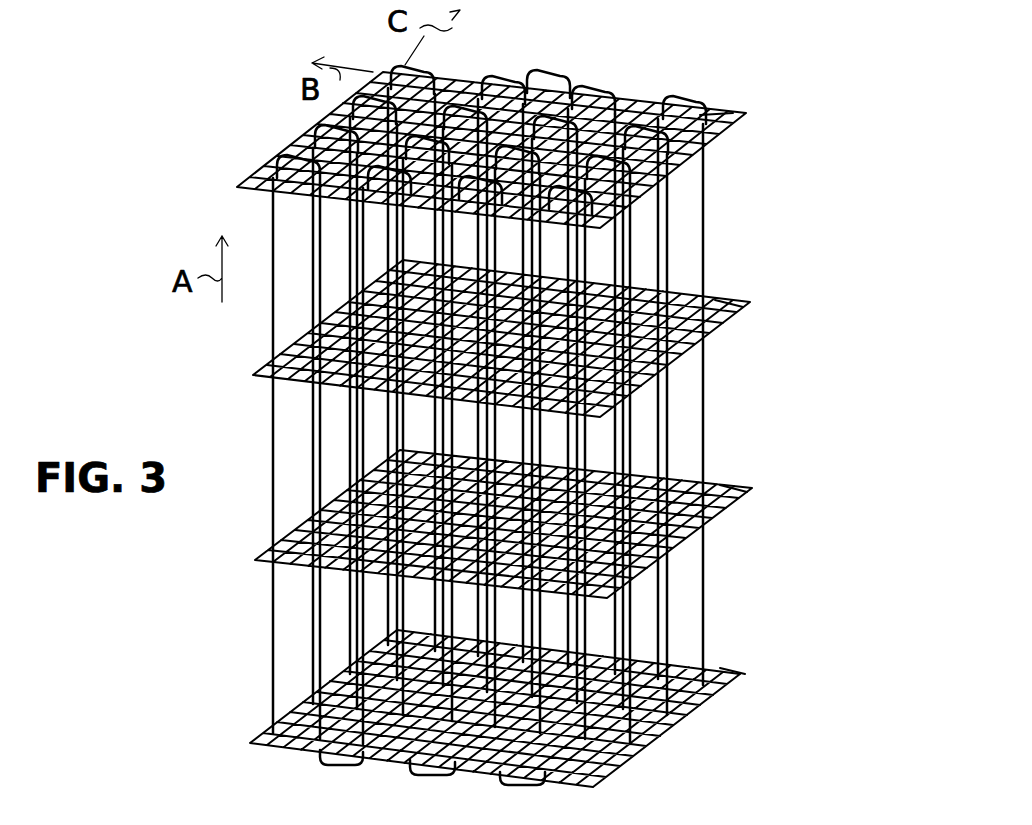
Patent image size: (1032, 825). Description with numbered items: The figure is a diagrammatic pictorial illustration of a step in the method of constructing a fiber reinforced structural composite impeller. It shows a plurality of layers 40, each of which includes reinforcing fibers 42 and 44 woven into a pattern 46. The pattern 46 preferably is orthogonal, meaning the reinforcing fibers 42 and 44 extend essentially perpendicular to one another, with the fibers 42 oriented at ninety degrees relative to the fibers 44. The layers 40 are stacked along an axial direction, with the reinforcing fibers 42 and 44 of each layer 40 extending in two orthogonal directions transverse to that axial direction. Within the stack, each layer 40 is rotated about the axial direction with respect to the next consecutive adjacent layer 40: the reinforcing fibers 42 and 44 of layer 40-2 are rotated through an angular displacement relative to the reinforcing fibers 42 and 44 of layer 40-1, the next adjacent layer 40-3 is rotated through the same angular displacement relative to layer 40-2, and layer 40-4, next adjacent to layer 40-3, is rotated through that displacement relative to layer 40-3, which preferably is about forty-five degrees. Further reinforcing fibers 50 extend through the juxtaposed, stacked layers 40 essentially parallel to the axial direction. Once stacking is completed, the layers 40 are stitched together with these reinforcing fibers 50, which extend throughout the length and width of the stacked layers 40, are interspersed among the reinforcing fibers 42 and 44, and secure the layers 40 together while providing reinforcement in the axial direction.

The layer 40 is at (468, 72).
The first layer 40-1 is at (755, 114).
The second layer 40-2 is at (754, 319).
The third layer 40-3 is at (764, 503).
The fourth layer 40-4 is at (760, 688).
The reinforcing fibers 42 is at (700, 110).
The reinforcing fibers 44 is at (715, 133).
The pattern 46 is at (538, 102).
The further reinforcing fibers 50 is at (268, 453).